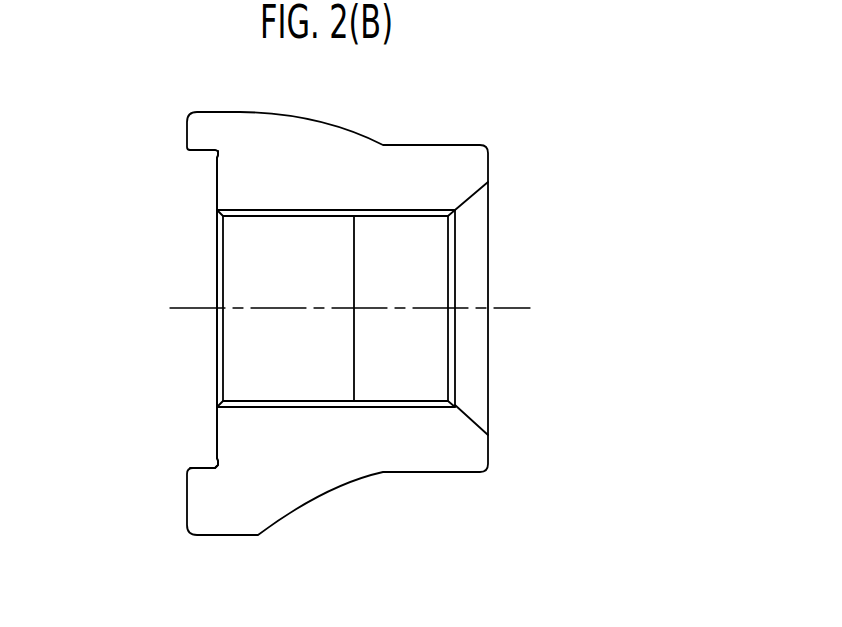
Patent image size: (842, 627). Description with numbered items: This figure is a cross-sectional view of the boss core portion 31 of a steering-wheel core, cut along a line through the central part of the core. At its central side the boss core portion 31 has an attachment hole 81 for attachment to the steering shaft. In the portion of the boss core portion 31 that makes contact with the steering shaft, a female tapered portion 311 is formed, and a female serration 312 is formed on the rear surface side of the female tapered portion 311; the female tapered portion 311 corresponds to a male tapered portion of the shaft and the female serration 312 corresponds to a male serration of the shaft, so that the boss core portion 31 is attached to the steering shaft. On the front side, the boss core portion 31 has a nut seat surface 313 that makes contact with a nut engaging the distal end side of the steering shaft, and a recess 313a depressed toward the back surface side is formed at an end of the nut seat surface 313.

The boss core portion 31 is at (312, 153).
The female tapered portion 311 is at (470, 197).
The female serration 312 is at (313, 212).
The nut seat surface 313 is at (215, 174).
The recess 313a is at (215, 152).
The attachment hole 81 is at (195, 251).